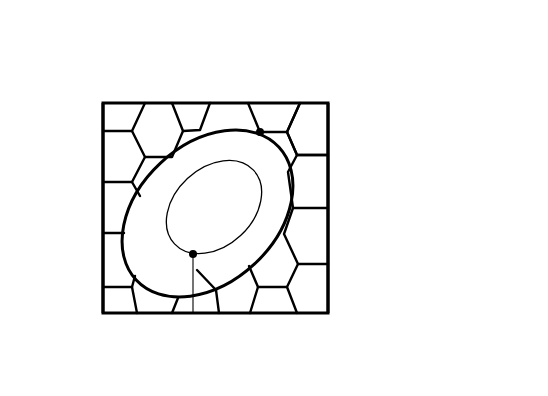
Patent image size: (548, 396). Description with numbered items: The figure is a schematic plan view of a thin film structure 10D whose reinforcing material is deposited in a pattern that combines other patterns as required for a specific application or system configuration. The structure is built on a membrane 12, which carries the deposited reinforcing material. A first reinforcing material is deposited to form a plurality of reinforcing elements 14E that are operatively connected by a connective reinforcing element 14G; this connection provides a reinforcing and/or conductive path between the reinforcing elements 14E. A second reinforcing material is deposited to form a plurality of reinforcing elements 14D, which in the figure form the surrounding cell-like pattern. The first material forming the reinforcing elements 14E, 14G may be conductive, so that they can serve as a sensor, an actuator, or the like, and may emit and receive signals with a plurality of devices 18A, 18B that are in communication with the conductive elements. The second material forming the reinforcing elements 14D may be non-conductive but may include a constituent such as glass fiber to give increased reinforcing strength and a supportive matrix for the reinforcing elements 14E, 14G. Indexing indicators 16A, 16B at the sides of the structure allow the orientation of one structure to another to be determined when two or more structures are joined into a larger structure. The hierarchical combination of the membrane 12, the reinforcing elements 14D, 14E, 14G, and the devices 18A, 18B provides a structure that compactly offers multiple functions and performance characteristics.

The thin film structure 10D is at (146, 80).
The membrane 12 is at (196, 103).
The reinforcing element 14D is at (304, 150).
The reinforcing element 14E is at (177, 188).
The connective reinforcing element 14G is at (226, 292).
The indexing indicator 16A is at (103, 236).
The indexing indicator 16B is at (328, 212).
The device 18A is at (262, 128).
The device 18B is at (191, 257).